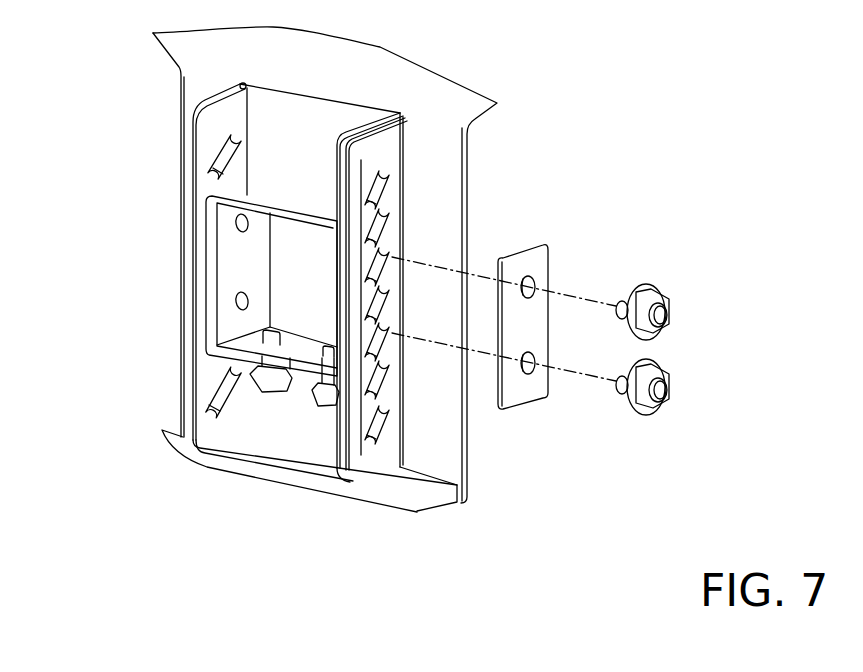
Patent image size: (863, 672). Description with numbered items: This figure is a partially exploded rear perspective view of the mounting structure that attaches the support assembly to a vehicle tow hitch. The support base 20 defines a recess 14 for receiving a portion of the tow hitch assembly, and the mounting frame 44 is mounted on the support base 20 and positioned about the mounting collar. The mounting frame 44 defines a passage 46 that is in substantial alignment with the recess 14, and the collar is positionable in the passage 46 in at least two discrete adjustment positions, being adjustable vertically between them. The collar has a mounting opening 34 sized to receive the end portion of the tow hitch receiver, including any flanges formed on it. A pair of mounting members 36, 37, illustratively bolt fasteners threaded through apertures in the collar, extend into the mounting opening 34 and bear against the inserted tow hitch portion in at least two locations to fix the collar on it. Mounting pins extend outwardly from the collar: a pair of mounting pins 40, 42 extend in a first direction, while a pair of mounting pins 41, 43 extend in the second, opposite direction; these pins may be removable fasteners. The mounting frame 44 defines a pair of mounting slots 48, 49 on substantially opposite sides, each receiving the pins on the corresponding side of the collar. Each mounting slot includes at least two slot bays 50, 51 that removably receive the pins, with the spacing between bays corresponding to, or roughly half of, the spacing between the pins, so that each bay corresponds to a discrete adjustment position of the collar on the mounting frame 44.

The recess 14 is at (330, 128).
The support base 20 is at (477, 92).
The mounting opening 34 is at (298, 267).
The mounting member 36 is at (257, 392).
The mounting member 37 is at (327, 405).
The mounting pin 40 is at (667, 293).
The mounting pin 41 is at (234, 223).
The mounting pin 42 is at (667, 368).
The mounting pin 43 is at (233, 305).
The mounting frame 44 is at (373, 462).
The passage 46 is at (279, 123).
The mounting slot 48 is at (351, 423).
The mounting slot 49 is at (207, 383).
The slot bay 50 is at (366, 177).
The slot bay 51 is at (361, 224).